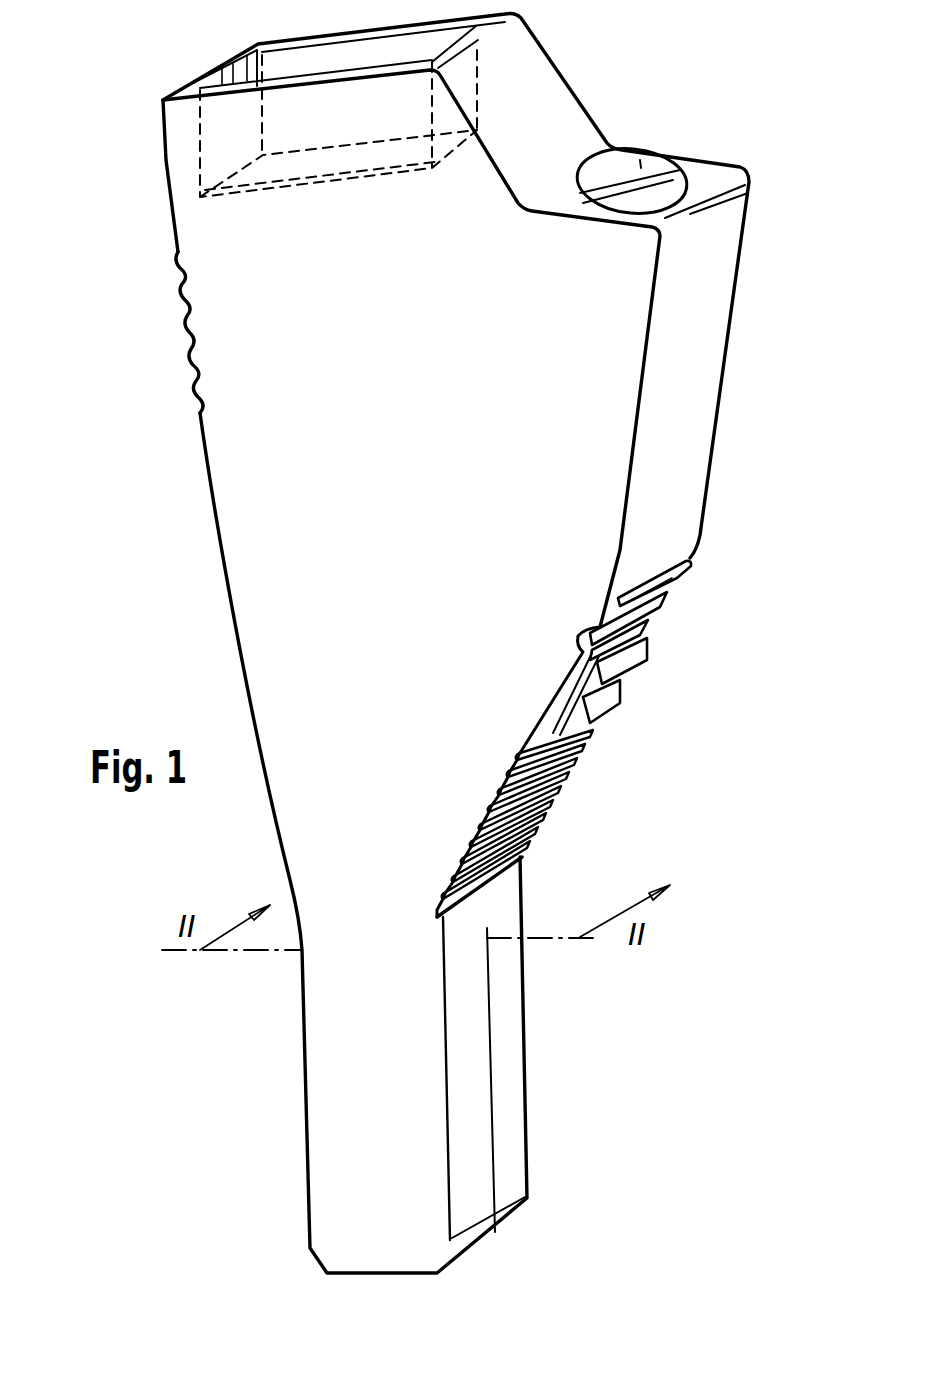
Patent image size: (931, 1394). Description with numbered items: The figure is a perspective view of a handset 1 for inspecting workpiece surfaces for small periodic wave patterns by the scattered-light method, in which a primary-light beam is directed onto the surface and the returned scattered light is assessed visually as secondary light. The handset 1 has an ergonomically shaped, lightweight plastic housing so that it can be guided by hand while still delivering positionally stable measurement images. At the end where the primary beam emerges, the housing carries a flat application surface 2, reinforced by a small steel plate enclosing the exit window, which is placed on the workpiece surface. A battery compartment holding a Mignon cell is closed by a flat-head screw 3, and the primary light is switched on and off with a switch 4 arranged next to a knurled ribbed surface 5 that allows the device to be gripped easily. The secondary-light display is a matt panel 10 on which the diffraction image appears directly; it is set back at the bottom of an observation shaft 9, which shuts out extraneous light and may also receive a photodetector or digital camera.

The handset 1 is at (283, 578).
The application surface 2 is at (386, 1290).
The flat-head screw 3 is at (645, 165).
The switch 4 is at (623, 695).
The knurled ribbed surface 5 is at (192, 343).
The observation shaft 9 is at (303, 62).
The matt panel 10 is at (330, 183).